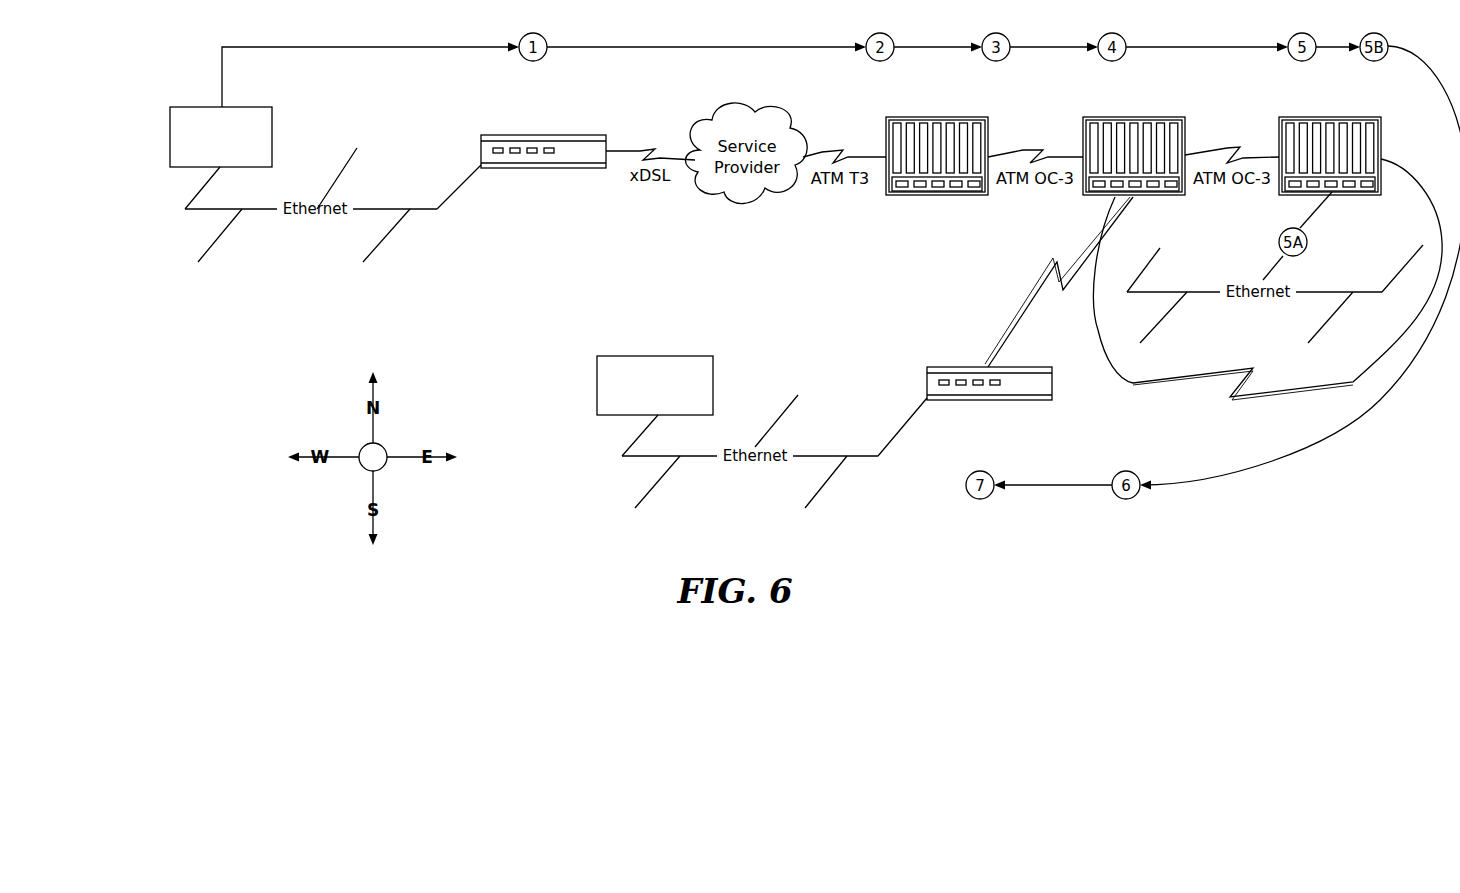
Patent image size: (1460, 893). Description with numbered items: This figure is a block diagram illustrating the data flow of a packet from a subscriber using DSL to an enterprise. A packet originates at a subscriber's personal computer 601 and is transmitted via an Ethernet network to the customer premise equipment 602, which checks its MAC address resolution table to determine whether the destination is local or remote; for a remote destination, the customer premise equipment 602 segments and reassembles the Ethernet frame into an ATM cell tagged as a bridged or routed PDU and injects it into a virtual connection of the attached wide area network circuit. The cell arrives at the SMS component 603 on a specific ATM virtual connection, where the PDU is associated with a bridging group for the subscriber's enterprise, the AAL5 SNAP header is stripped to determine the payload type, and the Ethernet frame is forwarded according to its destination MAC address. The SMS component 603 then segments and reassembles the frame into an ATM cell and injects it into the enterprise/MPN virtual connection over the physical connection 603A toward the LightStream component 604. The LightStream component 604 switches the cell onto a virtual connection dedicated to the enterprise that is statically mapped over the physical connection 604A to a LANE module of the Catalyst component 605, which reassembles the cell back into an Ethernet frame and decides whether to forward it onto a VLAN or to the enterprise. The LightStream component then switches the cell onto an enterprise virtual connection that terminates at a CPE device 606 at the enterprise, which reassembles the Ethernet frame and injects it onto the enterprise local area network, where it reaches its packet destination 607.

The personal computer 601 is at (221, 127).
The customer premise equipment 602 is at (543, 153).
The SMS component 603 is at (937, 165).
The physical connection 603A is at (822, 152).
The LightStream component 604 is at (1134, 156).
The physical connection 604A is at (1023, 150).
The Catalyst component 605 is at (1330, 156).
The customer premises equipment 606 is at (989, 384).
The packet destination host 607 is at (655, 374).